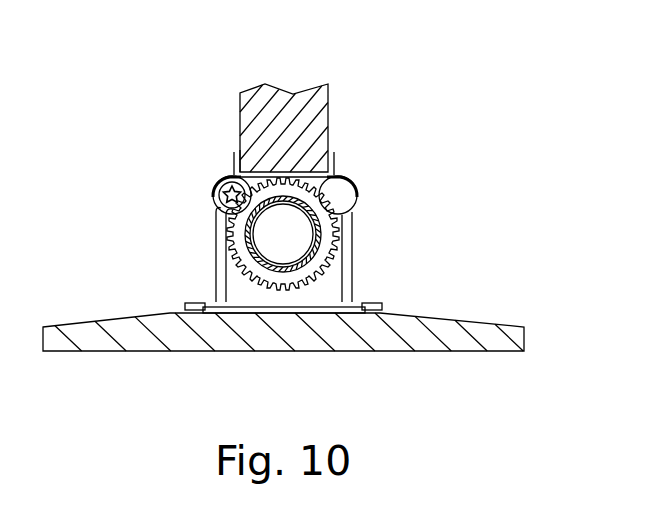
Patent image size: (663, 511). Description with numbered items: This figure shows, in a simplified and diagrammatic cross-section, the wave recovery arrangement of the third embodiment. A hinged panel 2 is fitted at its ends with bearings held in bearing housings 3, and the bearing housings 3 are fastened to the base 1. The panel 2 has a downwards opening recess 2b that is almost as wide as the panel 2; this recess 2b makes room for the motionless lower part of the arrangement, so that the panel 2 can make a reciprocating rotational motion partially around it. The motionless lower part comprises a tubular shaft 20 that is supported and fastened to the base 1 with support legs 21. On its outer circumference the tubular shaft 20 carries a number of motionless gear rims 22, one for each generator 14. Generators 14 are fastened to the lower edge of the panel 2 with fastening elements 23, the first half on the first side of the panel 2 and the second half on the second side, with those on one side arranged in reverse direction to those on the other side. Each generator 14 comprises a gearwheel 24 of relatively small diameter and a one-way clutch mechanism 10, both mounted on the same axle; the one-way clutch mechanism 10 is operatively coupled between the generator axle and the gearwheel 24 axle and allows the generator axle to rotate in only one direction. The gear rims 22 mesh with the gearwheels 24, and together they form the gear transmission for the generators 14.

The base 1 is at (487, 320).
The hinged panel 2 is at (330, 103).
The downwards opening recess 2b is at (278, 172).
The bearing housing 3 is at (218, 278).
The one-way clutch mechanism 10 is at (219, 201).
The generator 14 is at (212, 181).
The tubular shaft 20 is at (280, 262).
The support leg 21 is at (340, 293).
The gear rim 22 is at (347, 243).
The fastening element 23 is at (345, 170).
The gearwheel 24 is at (220, 212).